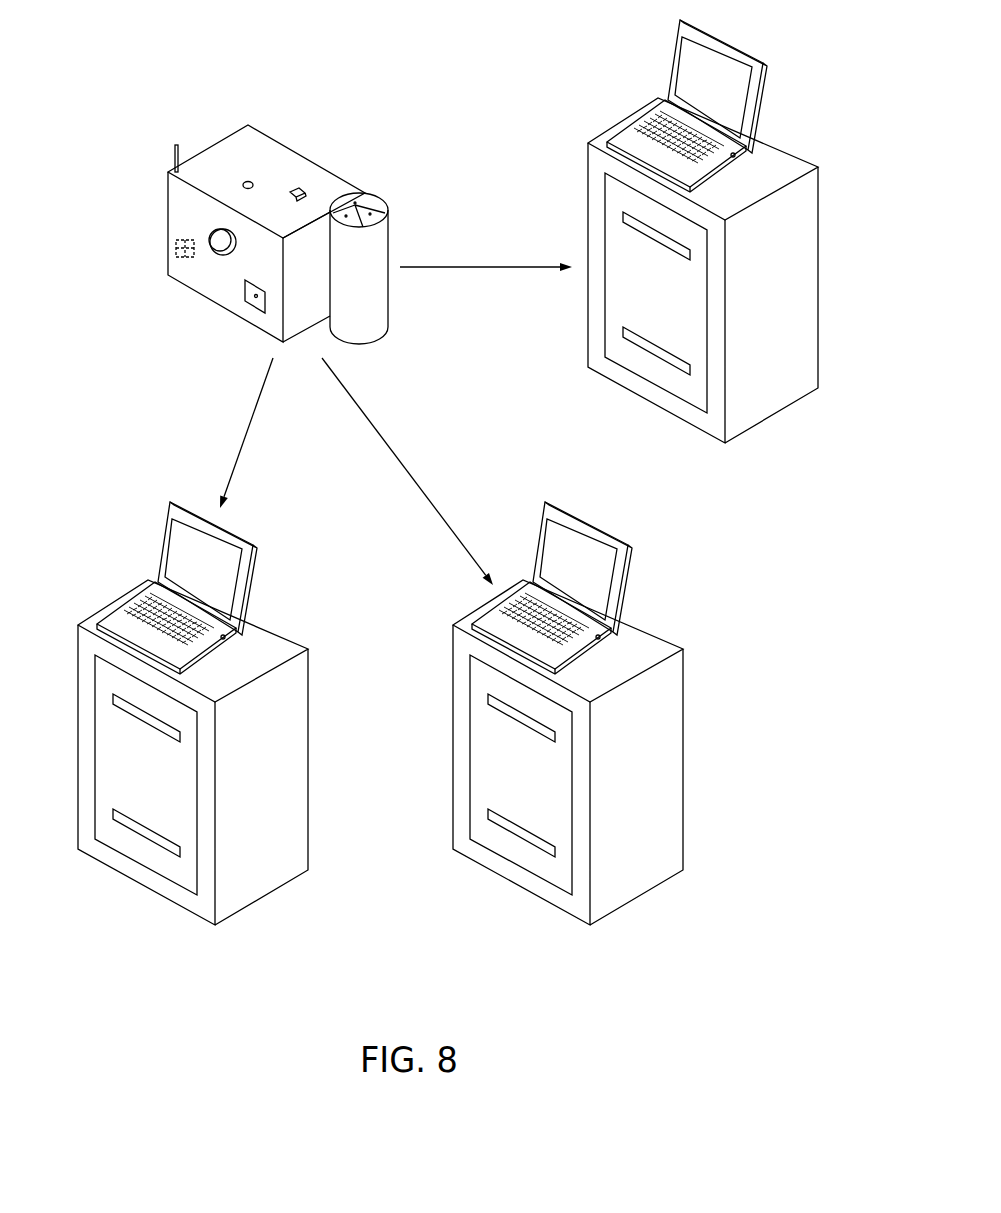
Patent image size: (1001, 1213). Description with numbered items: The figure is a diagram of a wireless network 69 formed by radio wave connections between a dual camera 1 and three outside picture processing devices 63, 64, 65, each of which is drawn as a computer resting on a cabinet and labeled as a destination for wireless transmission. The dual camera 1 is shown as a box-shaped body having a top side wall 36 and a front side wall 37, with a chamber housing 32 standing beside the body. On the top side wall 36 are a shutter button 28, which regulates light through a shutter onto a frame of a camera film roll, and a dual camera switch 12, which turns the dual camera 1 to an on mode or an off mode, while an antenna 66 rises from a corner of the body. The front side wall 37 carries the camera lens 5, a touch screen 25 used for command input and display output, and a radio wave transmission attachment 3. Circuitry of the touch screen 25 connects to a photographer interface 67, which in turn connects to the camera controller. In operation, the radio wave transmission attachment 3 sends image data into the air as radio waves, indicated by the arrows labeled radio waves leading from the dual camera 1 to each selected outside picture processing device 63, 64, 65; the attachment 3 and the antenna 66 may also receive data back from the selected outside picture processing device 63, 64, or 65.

The wireless network 69 is at (88, 43).
The dual camera 1 is at (382, 153).
The top side wall 36 is at (215, 148).
The front side wall 37 is at (185, 280).
The antenna 66 is at (175, 150).
The shutter button 28 is at (248, 181).
The dual camera switch 12 is at (300, 188).
The radio wave transmission attachment 3 is at (172, 247).
The camera lens 5 is at (222, 253).
The touch screen 25 is at (250, 283).
The photographer interface 67 is at (257, 293).
The chamber housing 32 is at (380, 242).
The outside picture processing device 65 is at (623, 422).
The outside picture processing device 63 is at (213, 747).
The outside picture processing device 64 is at (588, 747).